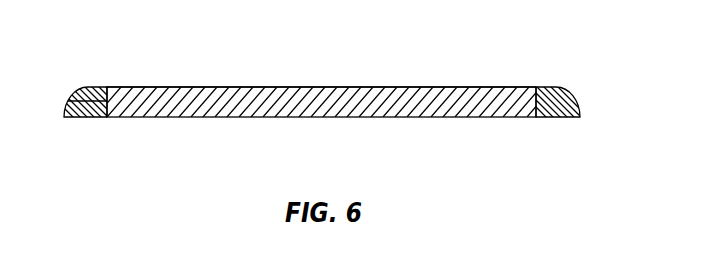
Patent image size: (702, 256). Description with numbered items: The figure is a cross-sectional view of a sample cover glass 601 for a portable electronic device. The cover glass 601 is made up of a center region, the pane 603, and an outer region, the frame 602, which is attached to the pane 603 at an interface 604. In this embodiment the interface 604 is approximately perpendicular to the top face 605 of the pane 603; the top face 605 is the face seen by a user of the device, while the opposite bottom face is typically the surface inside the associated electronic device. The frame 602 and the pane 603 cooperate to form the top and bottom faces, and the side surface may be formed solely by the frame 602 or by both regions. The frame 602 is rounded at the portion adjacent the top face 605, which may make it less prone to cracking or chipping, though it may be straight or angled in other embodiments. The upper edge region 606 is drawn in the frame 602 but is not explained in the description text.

The cover glass / glass article 601 is at (329, 86).
The rounded edge portion 602 is at (105, 87).
The central planar portion 603 is at (315, 102).
The lower edge region 604 is at (98, 102).
The top surface 605 is at (457, 86).
The upper edge region 606 is at (88, 88).